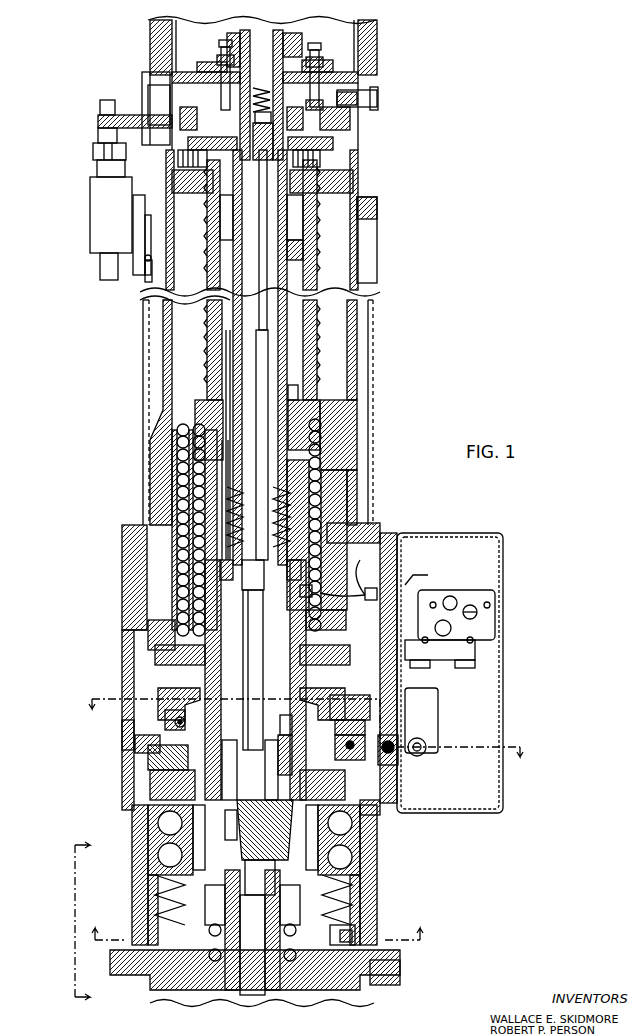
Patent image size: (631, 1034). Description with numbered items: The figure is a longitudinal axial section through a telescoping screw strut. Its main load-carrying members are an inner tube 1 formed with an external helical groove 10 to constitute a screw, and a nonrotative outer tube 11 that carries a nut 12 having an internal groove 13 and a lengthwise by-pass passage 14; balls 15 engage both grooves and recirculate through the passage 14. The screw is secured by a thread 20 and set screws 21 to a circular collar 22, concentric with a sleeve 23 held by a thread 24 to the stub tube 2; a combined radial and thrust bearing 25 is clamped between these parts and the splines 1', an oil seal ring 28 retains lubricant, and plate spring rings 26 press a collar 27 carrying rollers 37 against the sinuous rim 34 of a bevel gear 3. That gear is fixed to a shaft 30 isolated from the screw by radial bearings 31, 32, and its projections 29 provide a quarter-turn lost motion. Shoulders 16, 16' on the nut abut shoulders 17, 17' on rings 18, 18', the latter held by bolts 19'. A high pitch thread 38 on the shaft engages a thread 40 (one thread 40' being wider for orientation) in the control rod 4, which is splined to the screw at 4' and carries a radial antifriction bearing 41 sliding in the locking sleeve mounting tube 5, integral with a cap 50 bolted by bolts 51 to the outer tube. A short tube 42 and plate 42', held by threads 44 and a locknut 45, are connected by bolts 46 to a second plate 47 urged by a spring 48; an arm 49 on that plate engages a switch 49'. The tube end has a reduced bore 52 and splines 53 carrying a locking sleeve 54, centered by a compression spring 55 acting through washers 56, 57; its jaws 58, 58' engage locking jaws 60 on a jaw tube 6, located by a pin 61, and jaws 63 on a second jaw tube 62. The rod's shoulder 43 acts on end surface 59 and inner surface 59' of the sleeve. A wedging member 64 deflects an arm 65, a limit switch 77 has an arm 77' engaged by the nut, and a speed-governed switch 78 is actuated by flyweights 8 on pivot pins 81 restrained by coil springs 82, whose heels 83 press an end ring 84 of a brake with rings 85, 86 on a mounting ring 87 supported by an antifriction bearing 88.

The inner tube 1 is at (253, 412).
The splines 1' is at (252, 905).
The stub tube 2 is at (393, 892).
The bevel gear 3 is at (162, 921).
The control rod 4 is at (303, 716).
The splines 4' is at (260, 875).
The locking sleeve mounting tube 5 is at (207, 227).
The jaw tube 6 is at (315, 640).
The flyweights 8 is at (158, 688).
The helical groove 10 is at (310, 333).
The outer tube 11 is at (373, 380).
The nut 12 is at (357, 415).
The internal helical groove 13 is at (305, 400).
The by-pass passage 14 is at (190, 508).
The balls 15 is at (170, 495).
The shoulders 16 is at (241, 610).
The shoulders 16' is at (299, 355).
The shoulders 17 is at (266, 670).
The shoulders 17' is at (249, 225).
The ring 18 is at (256, 657).
The ring 18' is at (286, 194).
The bolts 19' is at (271, 171).
The thread 20 is at (289, 752).
The set screws 21 is at (175, 725).
The circular collar 22 is at (132, 812).
The sleeve 23 is at (150, 790).
The thread 24 is at (148, 832).
The combined radial and thrust bearing 25 is at (377, 865).
The plate spring rings 26 is at (158, 878).
The collar 27 is at (158, 905).
The oil seal ring 28 is at (148, 768).
The projections 29 is at (192, 967).
The shaft 30 is at (280, 935).
The radial bearing 31 is at (270, 928).
The radial bearing 32 is at (238, 860).
The rim 34 is at (334, 992).
The rollers 37 is at (355, 930).
The high pitch thread 38 is at (239, 834).
The thread 40 is at (260, 763).
The thread 40' is at (226, 763).
The radial antifriction bearing 41 is at (250, 78).
The short tube 42 is at (265, 95).
The plate 42' is at (241, 88).
The shoulder 43 is at (233, 280).
The threads 44 is at (240, 53).
The locknut 45 is at (233, 34).
The bolts 46 is at (221, 50).
The second plate 47 is at (320, 130).
The spring 48 is at (300, 65).
The arm 49 is at (141, 108).
The switch 49' is at (114, 190).
The cap 50 is at (321, 67).
The bolts 51 is at (374, 107).
The reduced bore 52 is at (222, 368).
The splines 53 is at (226, 370).
The locking sleeve 54 is at (217, 390).
The compression spring 55 is at (300, 505).
The washer 56 is at (290, 493).
The washer 57 is at (320, 530).
The jaws 58 is at (348, 605).
The jaws 58' is at (315, 382).
The end surface 59 is at (228, 595).
The inner surface 59' is at (326, 573).
The locking jaws 60 is at (285, 595).
The locating pin 61 is at (205, 655).
The second jaw tube 62 is at (303, 218).
The locking jaws 63 is at (303, 245).
The wedging member 64 is at (162, 443).
The arm 65 is at (145, 280).
The limit switch 77 is at (450, 619).
The arm 77' is at (369, 572).
The switch 78 is at (421, 698).
The pivot pins 81 is at (290, 725).
The coil springs 82 is at (355, 703).
The heels 83 is at (350, 721).
The end ring 84 is at (132, 730).
The rings 85 is at (122, 727).
The rings 86 is at (398, 775).
The mounting ring 87 is at (350, 740).
The antifriction bearing 88 is at (135, 747).